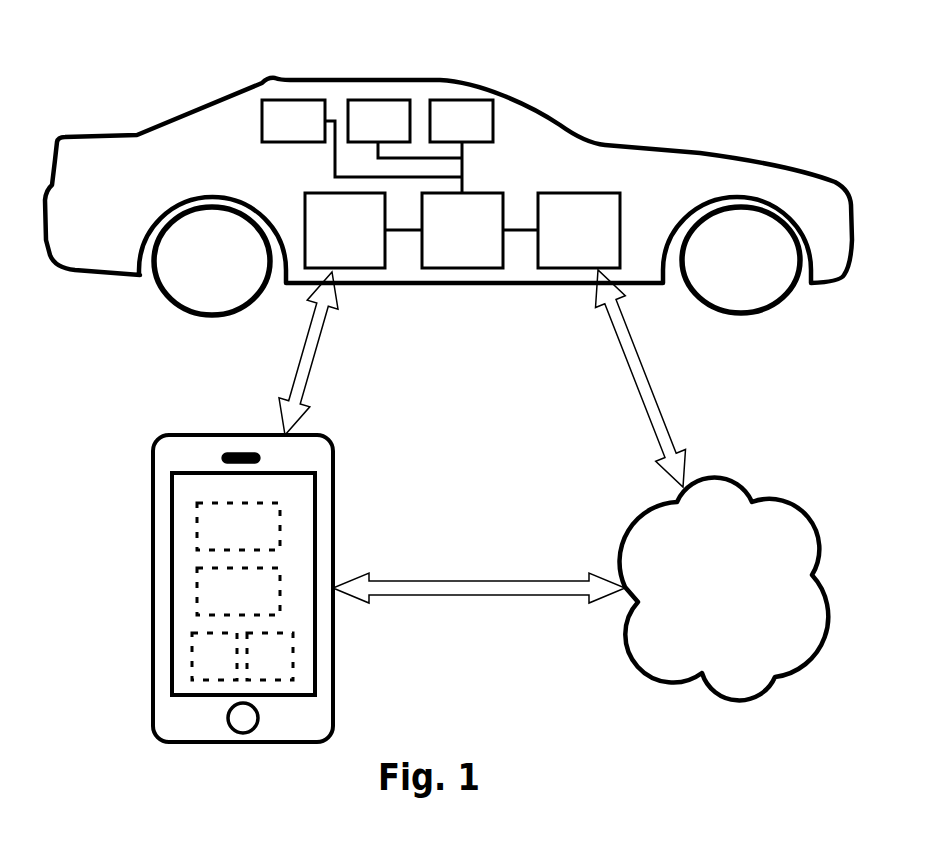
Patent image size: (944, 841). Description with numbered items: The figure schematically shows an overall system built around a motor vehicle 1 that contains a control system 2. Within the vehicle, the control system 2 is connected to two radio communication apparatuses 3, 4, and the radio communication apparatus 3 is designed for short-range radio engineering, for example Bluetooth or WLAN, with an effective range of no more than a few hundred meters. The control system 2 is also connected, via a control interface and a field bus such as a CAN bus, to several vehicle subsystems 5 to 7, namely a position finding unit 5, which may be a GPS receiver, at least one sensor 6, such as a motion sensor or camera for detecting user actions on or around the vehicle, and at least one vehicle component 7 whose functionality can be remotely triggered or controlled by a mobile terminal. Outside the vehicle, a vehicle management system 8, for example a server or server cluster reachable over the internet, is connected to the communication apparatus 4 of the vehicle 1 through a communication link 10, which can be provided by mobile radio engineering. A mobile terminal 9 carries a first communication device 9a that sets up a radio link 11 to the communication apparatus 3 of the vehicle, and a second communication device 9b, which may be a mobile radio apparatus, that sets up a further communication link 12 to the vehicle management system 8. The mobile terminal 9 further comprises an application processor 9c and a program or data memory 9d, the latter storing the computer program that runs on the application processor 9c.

The motor vehicle 1 is at (455, 79).
The control system 2 is at (480, 230).
The radio communication apparatus 3 is at (363, 230).
The radio communication apparatus 4 is at (579, 230).
The position finding unit 5 is at (362, 138).
The sensor 6 is at (405, 129).
The vehicle component 7 is at (461, 146).
The vehicle management system 8 is at (724, 589).
The mobile terminal 9 is at (214, 588).
The first communication device 9a is at (238, 526).
The second communication device 9b is at (238, 591).
The application processor 9c is at (214, 656).
The program or data memory 9d is at (270, 656).
The communication link 10 is at (641, 378).
The radio link 11 is at (319, 353).
The further communication link 12 is at (479, 573).